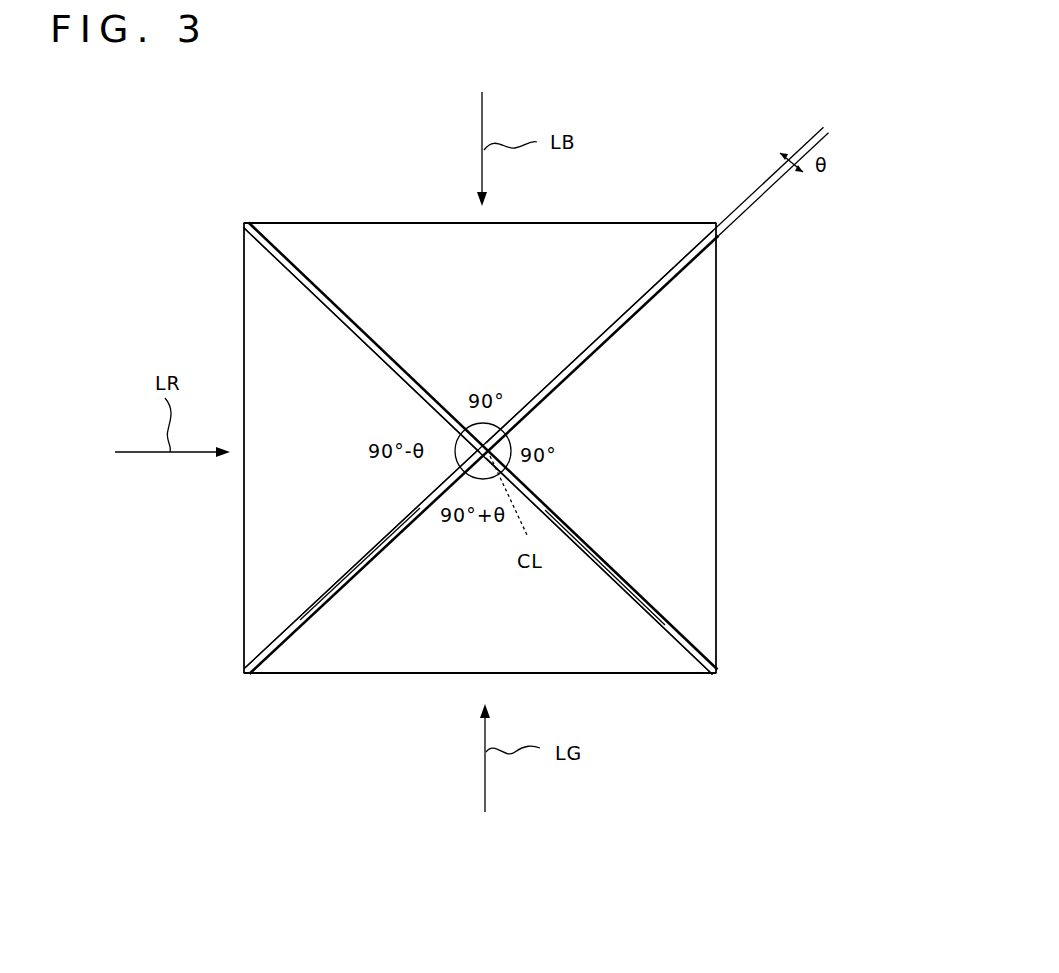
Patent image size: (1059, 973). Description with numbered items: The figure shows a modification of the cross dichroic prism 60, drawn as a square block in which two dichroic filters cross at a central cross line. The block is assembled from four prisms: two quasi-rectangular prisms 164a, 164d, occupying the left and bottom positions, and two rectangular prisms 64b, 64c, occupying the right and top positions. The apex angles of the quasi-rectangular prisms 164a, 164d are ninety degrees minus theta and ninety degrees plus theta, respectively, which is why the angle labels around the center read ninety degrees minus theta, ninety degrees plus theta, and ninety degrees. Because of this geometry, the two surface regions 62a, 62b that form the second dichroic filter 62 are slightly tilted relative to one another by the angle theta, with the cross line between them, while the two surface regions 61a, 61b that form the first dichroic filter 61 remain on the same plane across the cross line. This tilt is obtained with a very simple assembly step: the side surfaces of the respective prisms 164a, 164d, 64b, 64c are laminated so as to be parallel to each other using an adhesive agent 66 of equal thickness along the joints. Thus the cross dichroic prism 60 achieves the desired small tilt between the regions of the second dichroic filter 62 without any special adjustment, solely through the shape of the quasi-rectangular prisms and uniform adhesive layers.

The cross dichroic prism 60 is at (705, 216).
The first dichroic filter 61 is at (312, 264).
The surface region of the first dichroic filter 61a is at (683, 634).
The surface region of the first dichroic filter 61b is at (325, 305).
The second dichroic filter 62 is at (658, 268).
The surface region of the second dichroic filter 62a is at (580, 376).
The surface region of the second dichroic filter 62b is at (295, 640).
The rectangular prism 64b is at (703, 408).
The rectangular prism 64c is at (297, 222).
The adhesive agent 66 is at (357, 575).
The quasi-rectangular prism 164a is at (253, 621).
The quasi-rectangular prism 164d is at (600, 675).